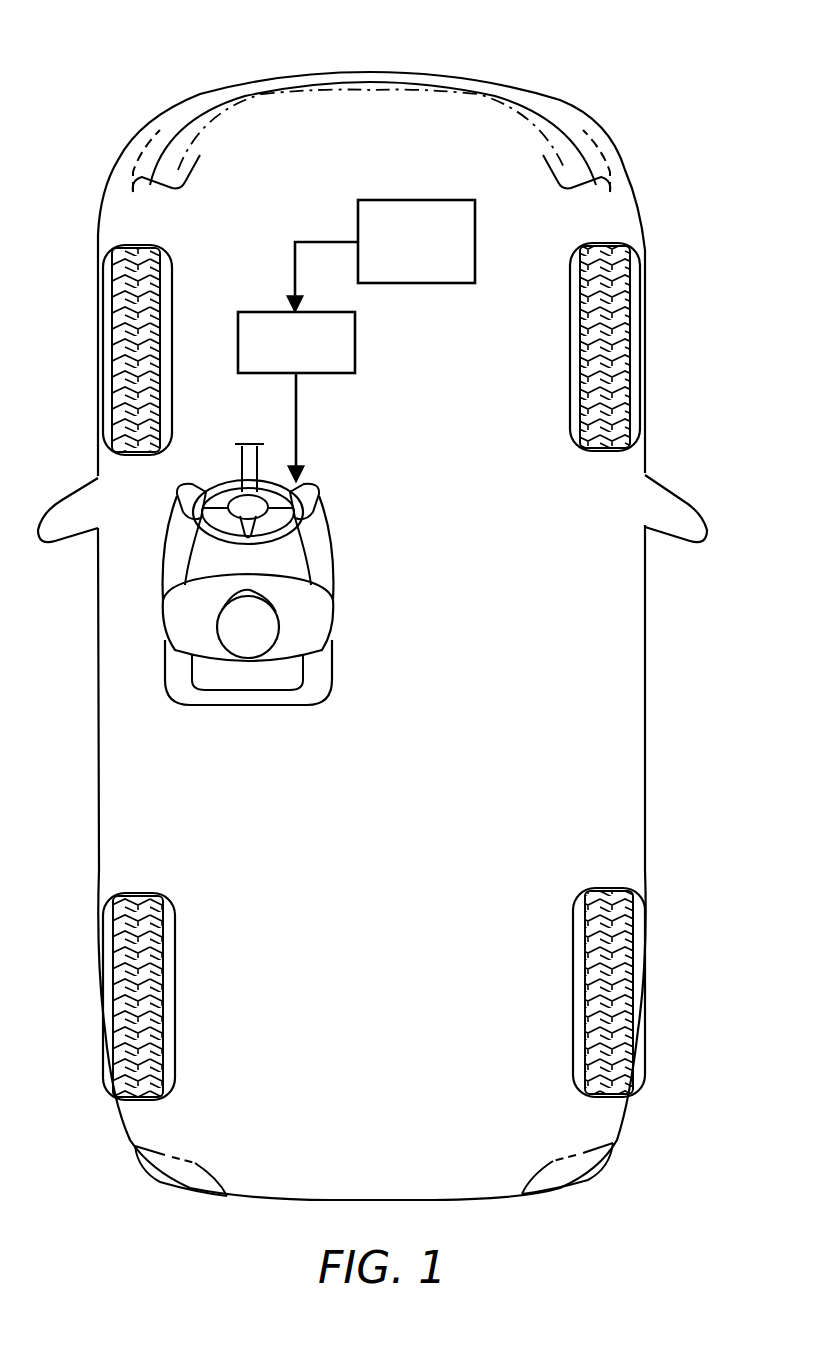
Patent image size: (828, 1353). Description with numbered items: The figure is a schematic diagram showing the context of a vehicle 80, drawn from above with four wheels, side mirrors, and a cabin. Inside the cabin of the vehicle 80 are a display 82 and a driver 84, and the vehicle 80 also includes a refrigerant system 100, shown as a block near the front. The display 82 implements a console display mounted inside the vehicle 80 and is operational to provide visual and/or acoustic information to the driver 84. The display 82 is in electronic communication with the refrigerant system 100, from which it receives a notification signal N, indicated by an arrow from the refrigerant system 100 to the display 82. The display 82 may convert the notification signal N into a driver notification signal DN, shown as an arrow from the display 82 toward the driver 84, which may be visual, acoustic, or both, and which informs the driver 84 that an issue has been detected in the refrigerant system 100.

The vehicle 80 is at (190, 92).
The refrigerant system 100 is at (384, 190).
The display 82 is at (270, 311).
The driver 84 is at (186, 650).